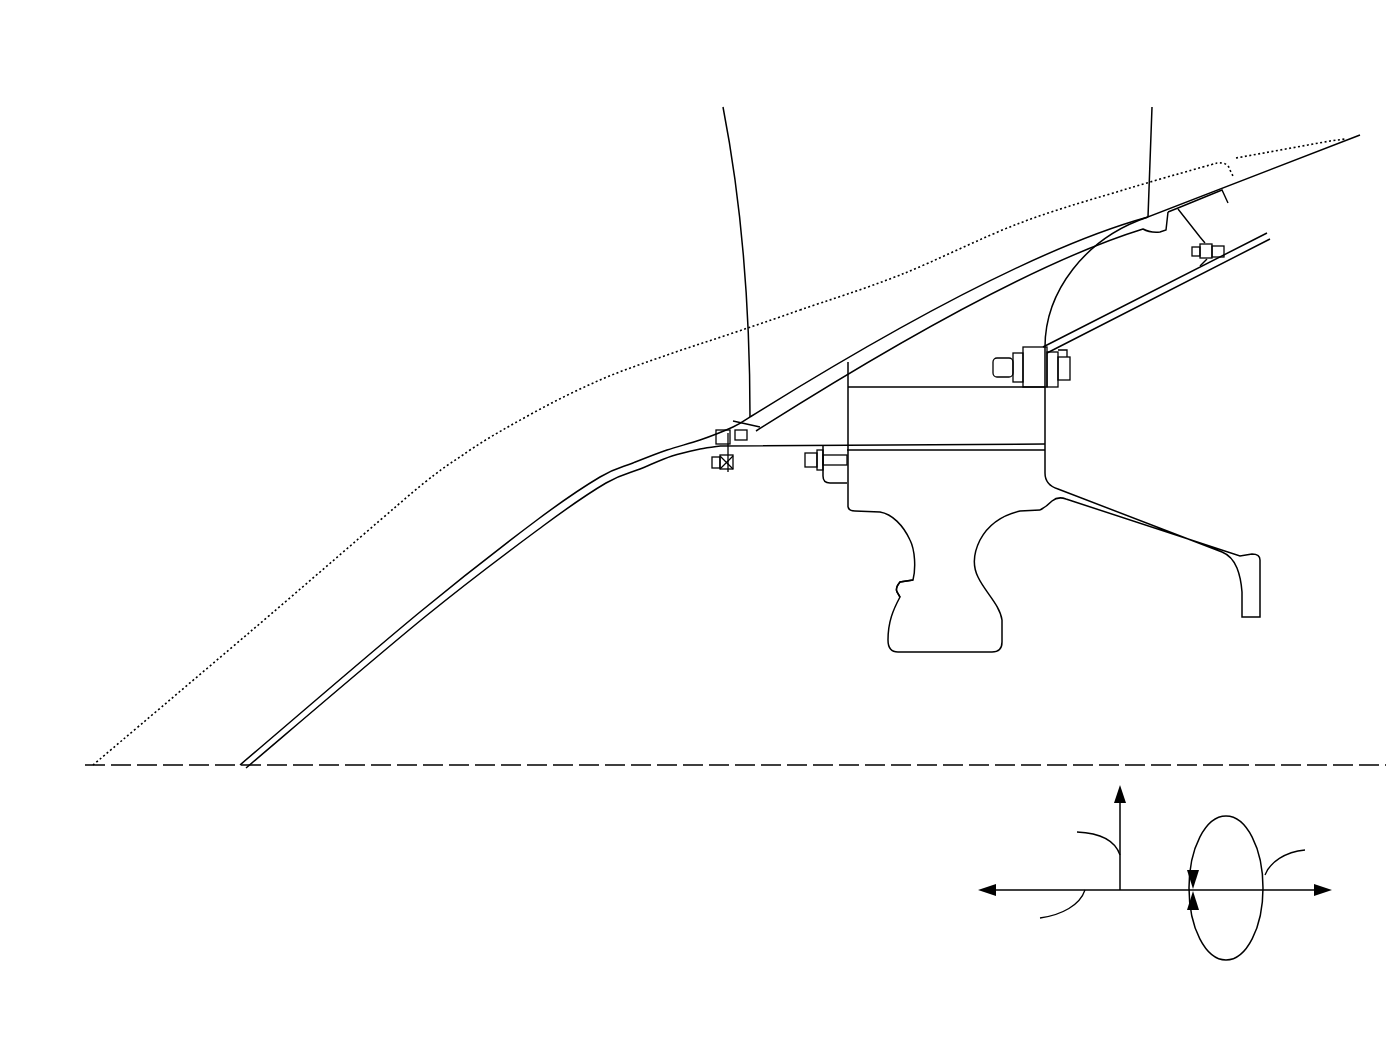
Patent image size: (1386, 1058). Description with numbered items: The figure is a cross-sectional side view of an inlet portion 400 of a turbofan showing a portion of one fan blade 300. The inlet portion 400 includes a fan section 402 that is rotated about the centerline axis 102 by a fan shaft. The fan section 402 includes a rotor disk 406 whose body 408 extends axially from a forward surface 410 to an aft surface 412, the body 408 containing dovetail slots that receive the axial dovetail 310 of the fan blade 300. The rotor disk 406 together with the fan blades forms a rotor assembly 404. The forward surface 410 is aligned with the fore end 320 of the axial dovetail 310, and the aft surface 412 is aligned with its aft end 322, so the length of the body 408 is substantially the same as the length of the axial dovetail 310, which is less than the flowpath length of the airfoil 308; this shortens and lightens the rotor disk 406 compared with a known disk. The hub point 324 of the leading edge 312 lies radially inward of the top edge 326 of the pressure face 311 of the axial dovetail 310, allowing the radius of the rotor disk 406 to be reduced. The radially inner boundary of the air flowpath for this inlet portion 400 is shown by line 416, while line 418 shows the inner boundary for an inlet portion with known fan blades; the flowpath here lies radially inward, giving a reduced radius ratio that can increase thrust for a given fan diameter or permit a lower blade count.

The inlet portion 400 is at (263, 92).
The fan section 402 is at (674, 138).
The fan blade 300 is at (1156, 120).
The leading edge 312 is at (741, 240).
The airfoil 308 is at (766, 281).
The fore end 320 is at (830, 368).
The axial dovetail 310 is at (1027, 310).
The aft end 322 is at (1049, 308).
The top edge 326 is at (947, 386).
The pressure face 311 is at (920, 375).
The hub point 324 is at (757, 434).
The aft surface 412 is at (1047, 428).
The rotor assembly 404 is at (727, 504).
The forward surface 410 is at (847, 494).
The body 408 is at (969, 520).
The rotor disk 406 is at (903, 583).
The line 418 is at (414, 491).
The line 416 is at (483, 566).
The centerline axis 102 is at (722, 763).